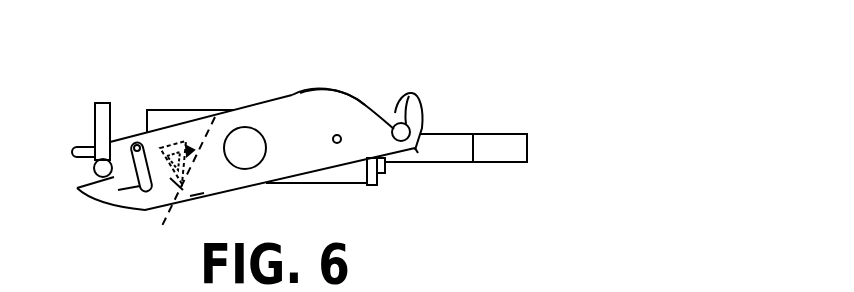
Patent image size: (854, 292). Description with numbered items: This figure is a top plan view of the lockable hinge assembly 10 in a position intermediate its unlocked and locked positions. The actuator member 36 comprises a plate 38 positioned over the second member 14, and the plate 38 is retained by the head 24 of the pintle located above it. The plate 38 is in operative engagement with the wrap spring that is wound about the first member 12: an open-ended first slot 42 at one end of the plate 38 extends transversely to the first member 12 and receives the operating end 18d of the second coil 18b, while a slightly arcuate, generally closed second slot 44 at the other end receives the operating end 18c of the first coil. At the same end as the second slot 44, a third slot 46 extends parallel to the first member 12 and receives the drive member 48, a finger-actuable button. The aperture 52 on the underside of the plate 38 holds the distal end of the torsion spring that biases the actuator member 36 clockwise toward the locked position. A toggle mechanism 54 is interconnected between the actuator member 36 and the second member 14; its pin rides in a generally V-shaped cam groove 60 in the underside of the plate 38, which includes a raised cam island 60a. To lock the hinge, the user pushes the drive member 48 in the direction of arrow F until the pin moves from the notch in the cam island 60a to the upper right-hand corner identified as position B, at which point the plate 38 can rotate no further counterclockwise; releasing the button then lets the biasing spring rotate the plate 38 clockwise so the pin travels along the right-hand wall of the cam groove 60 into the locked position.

The lockable hinge assembly 10 is at (408, 66).
The first member 12 is at (465, 150).
The second member 14 is at (160, 110).
The second coil 18b is at (385, 168).
The operating end of the first coil 18c is at (135, 143).
The operating end of the second coil 18d is at (418, 153).
The head 24 is at (236, 158).
The actuator member 36 is at (273, 97).
The plate 38 is at (334, 107).
The first slot 42 is at (395, 112).
The second slot 44 is at (131, 190).
The third slot 46 is at (85, 172).
The drive member 48 is at (100, 102).
The aperture 52 is at (334, 137).
The toggle mechanism 54 is at (193, 147).
The cam groove 60 is at (196, 194).
The cam island 60a is at (174, 187).
The position B is at (181, 140).
The arrow F is at (102, 62).